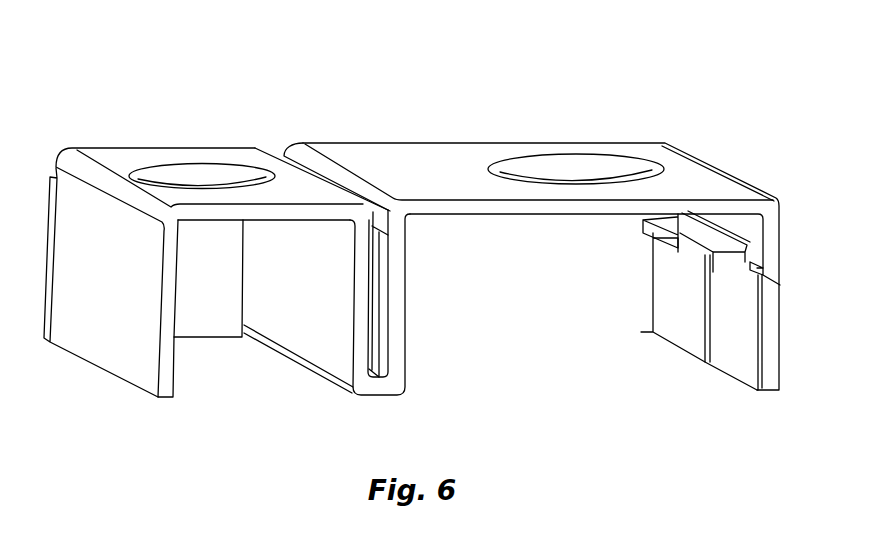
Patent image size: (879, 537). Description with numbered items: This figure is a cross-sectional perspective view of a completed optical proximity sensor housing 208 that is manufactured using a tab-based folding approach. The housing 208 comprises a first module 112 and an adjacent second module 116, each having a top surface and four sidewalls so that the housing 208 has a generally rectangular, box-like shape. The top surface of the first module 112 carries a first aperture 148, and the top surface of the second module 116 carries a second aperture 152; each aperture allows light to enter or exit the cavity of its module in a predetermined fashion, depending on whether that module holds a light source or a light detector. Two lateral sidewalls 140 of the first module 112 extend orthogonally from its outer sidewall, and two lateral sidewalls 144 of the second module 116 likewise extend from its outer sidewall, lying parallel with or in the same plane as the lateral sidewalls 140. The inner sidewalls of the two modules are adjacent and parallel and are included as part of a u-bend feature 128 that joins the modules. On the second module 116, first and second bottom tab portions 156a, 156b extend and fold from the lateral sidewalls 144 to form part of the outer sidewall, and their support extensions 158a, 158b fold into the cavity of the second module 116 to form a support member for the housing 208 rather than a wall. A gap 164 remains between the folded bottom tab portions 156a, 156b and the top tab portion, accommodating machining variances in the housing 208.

The housing 208 is at (722, 80).
The first module 112 is at (104, 133).
The first aperture 148 is at (186, 170).
The lateral sidewalls 140 is at (205, 322).
The u-bend feature 128 is at (402, 387).
The second module 116 is at (425, 140).
The lateral sidewalls 144 is at (478, 313).
The second aperture 152 is at (575, 165).
The second support extension 158b is at (640, 232).
The first support extension 158a is at (700, 260).
The second bottom tab portion 156b is at (660, 322).
The first bottom tab portion 156a is at (730, 350).
The gap 164 is at (780, 288).